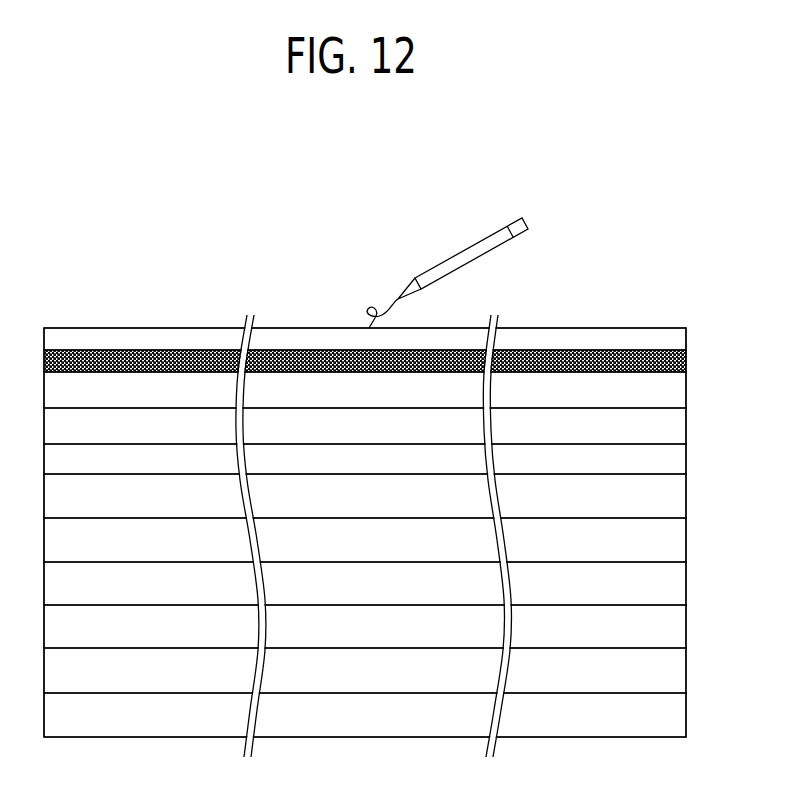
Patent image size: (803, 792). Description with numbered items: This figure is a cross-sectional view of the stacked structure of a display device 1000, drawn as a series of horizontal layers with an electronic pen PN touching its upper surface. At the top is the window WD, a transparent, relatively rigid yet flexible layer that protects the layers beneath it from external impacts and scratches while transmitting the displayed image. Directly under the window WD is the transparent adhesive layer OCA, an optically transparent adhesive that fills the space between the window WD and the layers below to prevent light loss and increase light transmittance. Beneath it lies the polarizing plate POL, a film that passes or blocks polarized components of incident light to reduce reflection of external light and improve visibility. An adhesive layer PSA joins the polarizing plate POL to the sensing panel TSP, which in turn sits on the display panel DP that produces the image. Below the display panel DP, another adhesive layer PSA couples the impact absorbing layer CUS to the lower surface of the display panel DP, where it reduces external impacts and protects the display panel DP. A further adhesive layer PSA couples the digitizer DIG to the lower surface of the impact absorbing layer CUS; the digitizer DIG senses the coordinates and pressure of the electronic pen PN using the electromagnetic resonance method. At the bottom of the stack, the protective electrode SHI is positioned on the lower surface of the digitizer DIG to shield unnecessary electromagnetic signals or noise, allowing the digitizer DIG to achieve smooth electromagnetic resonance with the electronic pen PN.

The display device 1000 is at (690, 248).
The window WD is at (686, 340).
The transparent adhesive layer OCA is at (686, 365).
The polarizing plate POL is at (686, 396).
The adhesive layer PSA is at (686, 428).
The sensing panel TSP is at (686, 461).
The display panel DP is at (686, 506).
The impact absorbing layer CUS is at (686, 586).
The digitizer DIG is at (686, 675).
The protective electrode SHI is at (686, 719).
The electronic pen PN is at (485, 242).